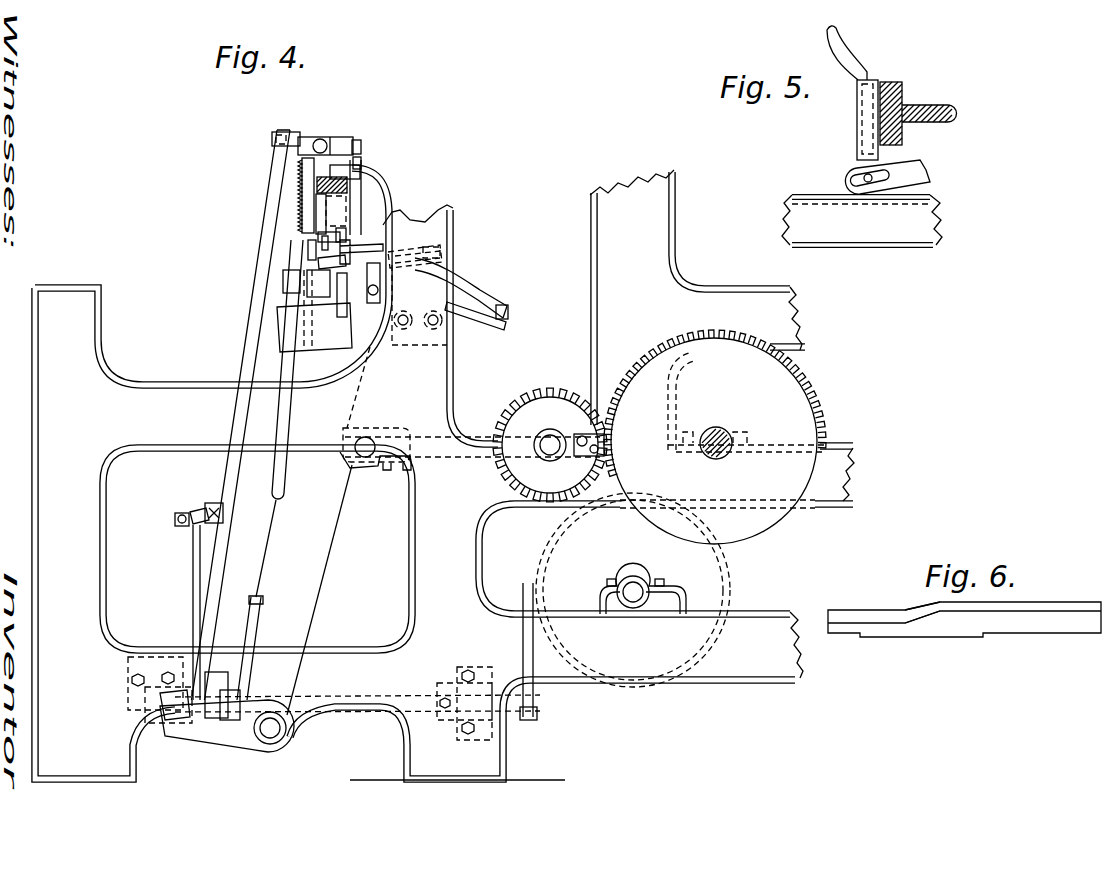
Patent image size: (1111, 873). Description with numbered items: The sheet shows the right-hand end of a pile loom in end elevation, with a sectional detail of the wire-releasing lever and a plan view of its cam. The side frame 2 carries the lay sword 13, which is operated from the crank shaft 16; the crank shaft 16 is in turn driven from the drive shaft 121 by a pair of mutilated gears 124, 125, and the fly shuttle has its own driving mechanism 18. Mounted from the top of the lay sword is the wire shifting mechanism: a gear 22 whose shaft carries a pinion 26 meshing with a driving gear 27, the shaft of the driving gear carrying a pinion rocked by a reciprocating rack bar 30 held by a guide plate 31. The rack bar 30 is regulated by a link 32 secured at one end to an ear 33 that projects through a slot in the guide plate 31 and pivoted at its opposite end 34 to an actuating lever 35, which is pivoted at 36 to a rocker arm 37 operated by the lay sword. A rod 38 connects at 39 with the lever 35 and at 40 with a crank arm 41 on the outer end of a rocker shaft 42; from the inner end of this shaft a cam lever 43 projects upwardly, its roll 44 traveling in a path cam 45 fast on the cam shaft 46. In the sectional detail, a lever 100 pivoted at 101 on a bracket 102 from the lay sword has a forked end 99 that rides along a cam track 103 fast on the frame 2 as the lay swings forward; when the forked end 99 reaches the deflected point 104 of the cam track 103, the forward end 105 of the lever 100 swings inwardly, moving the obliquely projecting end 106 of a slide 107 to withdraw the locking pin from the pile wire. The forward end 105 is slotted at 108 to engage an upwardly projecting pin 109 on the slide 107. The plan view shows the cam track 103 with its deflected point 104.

In FIG. 4, the side frame 2 is at (663, 192).
In FIG. 5, the side frame 2 is at (898, 237).
In FIG. 4, the lay sword 13 is at (326, 540).
In FIG. 4, the crank shaft 16 is at (548, 436).
In FIG. 4, the driving mechanism 18 is at (284, 493).
In FIG. 4, the gear 22 is at (362, 222).
In FIG. 4, the pinion 26 is at (320, 210).
In FIG. 4, the driving gear 27 is at (313, 165).
In FIG. 4, the rack bar 30 is at (346, 170).
In FIG. 4, the guide plate 31 is at (358, 158).
In FIG. 4, the link 32 is at (315, 138).
In FIG. 4, the ear 33 is at (356, 152).
In FIG. 4, the pivot end 34 is at (285, 132).
In FIG. 4, the actuating lever 35 is at (252, 366).
In FIG. 4, the pivot 36 is at (190, 738).
In FIG. 4, the rocker arm 37 is at (240, 746).
In FIG. 4, the rod 38 is at (195, 512).
In FIG. 4, the connection 39 is at (214, 503).
In FIG. 4, the connection 40 is at (175, 522).
In FIG. 4, the crank arm 41 is at (192, 566).
In FIG. 4, the rocker shaft 42 is at (325, 694).
In FIG. 4, the cam lever 43 is at (522, 634).
In FIG. 4, the roll 44 is at (543, 586).
In FIG. 4, the path cam 45 is at (565, 543).
In FIG. 4, the cam shaft 46 is at (633, 602).
In FIG. 4, the forked end 99 is at (508, 316).
In FIG. 4, the lever 100 is at (465, 273).
In FIG. 4, the pivot 101 is at (440, 248).
In FIG. 4, the bracket 102 is at (392, 258).
In FIG. 4, the cam track 103 is at (505, 327).
In FIG. 6, the cam track 103 is at (1055, 612).
In FIG. 6, the deflected point 104 is at (918, 612).
In FIG. 4, the forward end 105 is at (384, 252).
In FIG. 5, the forward end 105 is at (928, 170).
In FIG. 4, the obliquely projecting end 106 is at (322, 262).
In FIG. 5, the obliquely projecting end 106 is at (840, 38).
In FIG. 5, the slide 107 is at (868, 92).
In FIG. 5, the slot 108 is at (852, 178).
In FIG. 4, the pin 109 is at (310, 238).
In FIG. 5, the pin 109 is at (868, 186).
In FIG. 4, the drive shaft 121 is at (722, 433).
In FIG. 4, the mutilated gear 124 is at (810, 398).
In FIG. 4, the mutilated gear 125 is at (551, 400).